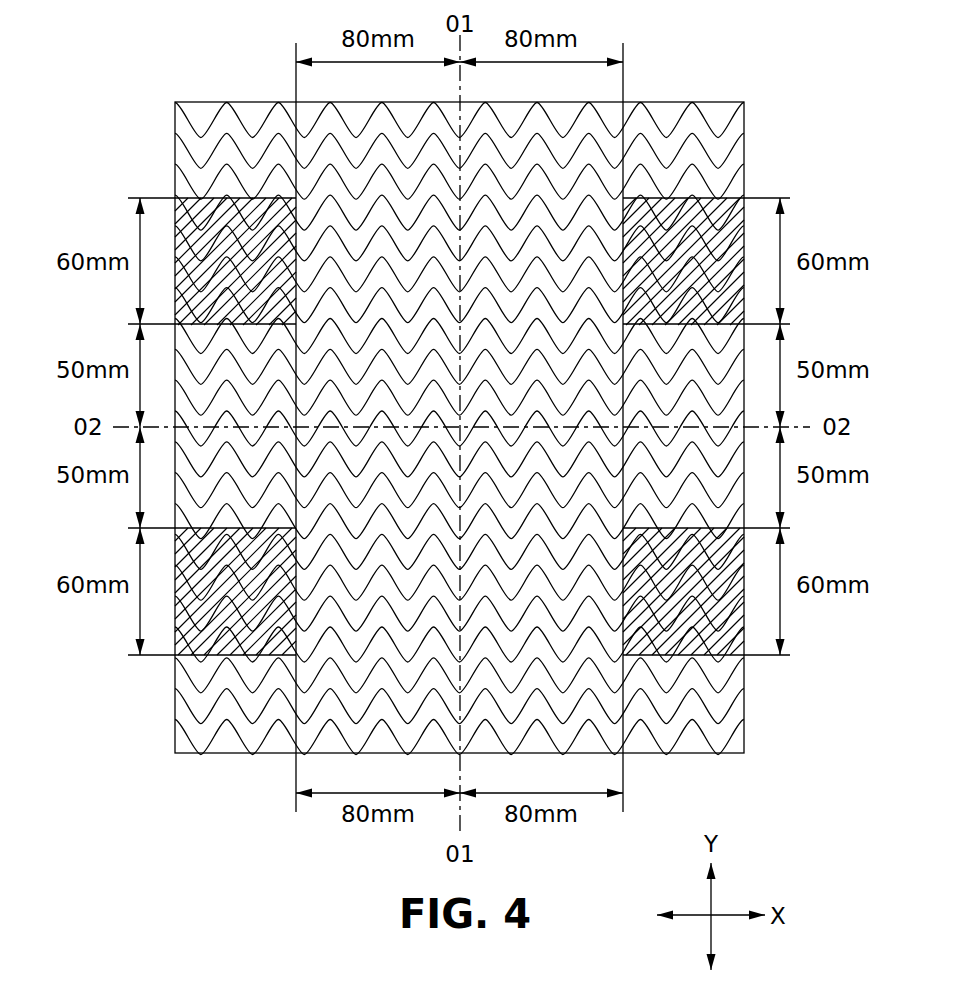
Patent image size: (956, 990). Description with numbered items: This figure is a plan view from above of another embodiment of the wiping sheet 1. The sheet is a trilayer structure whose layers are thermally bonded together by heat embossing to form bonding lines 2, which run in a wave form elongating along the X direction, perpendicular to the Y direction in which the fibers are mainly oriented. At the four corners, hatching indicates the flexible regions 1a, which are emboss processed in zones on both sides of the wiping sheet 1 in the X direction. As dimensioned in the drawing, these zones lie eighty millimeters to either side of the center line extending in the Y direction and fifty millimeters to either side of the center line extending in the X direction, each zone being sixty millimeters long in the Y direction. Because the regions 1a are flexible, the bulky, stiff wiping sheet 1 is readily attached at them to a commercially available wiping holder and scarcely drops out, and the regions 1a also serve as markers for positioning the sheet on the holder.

The wiping sheet 1 is at (757, 108).
The flexible region 1a is at (700, 215).
The bonding line 2 is at (653, 117).